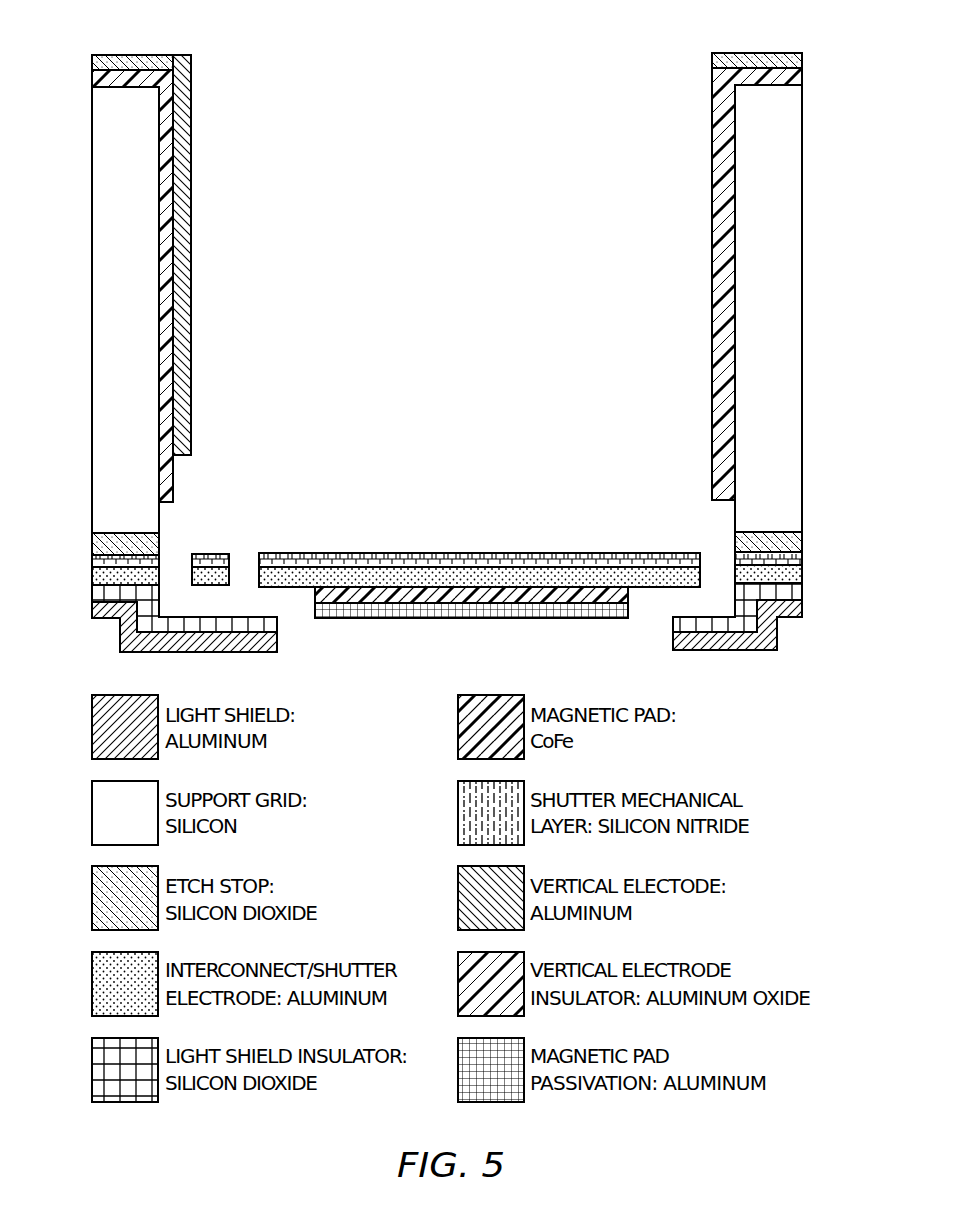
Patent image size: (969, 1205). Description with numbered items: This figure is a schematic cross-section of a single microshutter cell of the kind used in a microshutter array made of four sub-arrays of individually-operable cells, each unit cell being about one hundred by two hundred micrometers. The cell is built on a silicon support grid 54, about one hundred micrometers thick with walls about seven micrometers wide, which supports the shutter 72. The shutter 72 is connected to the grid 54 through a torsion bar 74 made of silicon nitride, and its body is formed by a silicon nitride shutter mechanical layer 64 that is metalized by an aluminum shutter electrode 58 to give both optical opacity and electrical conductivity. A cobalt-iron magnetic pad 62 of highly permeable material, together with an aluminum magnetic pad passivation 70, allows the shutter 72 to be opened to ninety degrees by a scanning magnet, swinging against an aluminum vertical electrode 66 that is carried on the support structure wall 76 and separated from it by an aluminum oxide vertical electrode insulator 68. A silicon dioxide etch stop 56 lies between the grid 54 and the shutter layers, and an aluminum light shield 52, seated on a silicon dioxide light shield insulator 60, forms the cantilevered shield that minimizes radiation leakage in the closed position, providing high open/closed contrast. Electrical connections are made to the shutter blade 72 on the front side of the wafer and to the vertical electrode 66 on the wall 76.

The light shield 52 is at (778, 632).
The silicon support grid 54 is at (802, 286).
The etch stop 56 is at (92, 546).
The shutter electrode 58 is at (92, 579).
The light shield insulator (silicon dioxide) 60 is at (92, 593).
The magnetic pad 62 is at (628, 604).
The shutter mechanical layer 64 is at (553, 552).
The vertical electrode 66 is at (193, 108).
The vertical electrode insulator 68 is at (92, 80).
The magnetic pad passivation 70 is at (449, 619).
The shutter 72 is at (479, 533).
The torsion bar 74 is at (212, 548).
The support structure wall 76 is at (137, 54).